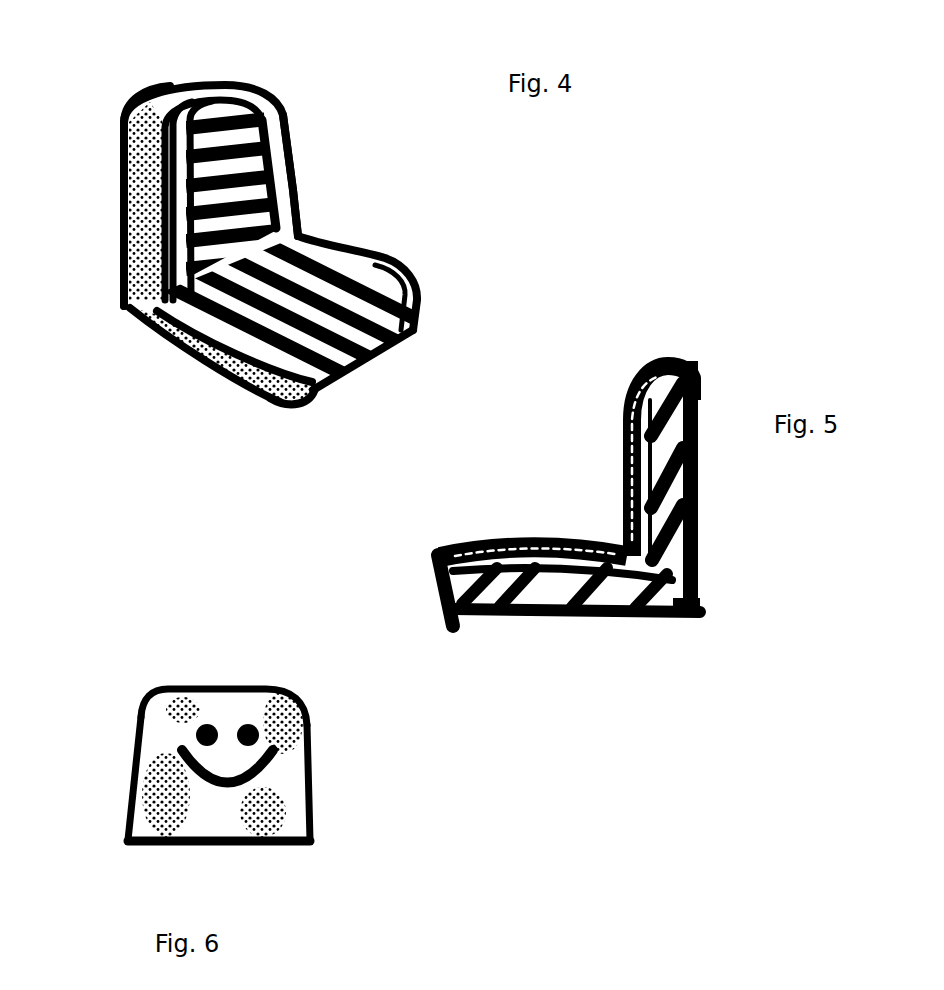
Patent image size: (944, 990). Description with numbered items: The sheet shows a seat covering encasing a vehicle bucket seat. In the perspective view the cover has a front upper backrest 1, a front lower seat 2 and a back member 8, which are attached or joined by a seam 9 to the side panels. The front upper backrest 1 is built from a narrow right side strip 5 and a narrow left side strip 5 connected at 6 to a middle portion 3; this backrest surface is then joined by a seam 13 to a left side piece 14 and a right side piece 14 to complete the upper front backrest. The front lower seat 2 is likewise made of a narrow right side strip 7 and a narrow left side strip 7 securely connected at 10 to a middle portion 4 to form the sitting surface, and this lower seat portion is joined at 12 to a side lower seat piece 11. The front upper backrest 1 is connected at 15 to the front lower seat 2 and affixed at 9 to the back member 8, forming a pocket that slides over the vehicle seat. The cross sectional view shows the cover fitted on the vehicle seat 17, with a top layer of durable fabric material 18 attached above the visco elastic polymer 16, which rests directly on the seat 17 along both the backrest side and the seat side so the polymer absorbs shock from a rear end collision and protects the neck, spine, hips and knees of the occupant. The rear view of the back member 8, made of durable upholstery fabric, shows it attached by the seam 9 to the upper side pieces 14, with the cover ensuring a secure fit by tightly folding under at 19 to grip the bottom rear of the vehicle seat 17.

In FIG. 4, the front upper backrest 1 is at (337, 212).
In FIG. 4, the front lower seat 2 is at (337, 212).
In FIG. 4, the middle portion 3 is at (212, 82).
In FIG. 4, the middle portion 4 is at (356, 352).
In FIG. 4, the narrow side strip 5 is at (167, 97).
In FIG. 4, the connection 6 is at (270, 112).
In FIG. 4, the narrow side strip 7 is at (150, 322).
In FIG. 4, the back member 8 is at (125, 105).
In FIG. 6, the back member 8 is at (223, 703).
In FIG. 4, the seam 9 is at (128, 108).
In FIG. 6, the seam 9 is at (303, 780).
In FIG. 4, the connection 10 is at (417, 315).
In FIG. 4, the side lower seat piece 11 is at (200, 358).
In FIG. 4, the joint 12 is at (263, 400).
In FIG. 4, the seam 13 is at (130, 163).
In FIG. 4, the side piece 14 is at (150, 270).
In FIG. 4, the connection 15 is at (124, 312).
In FIG. 5, the visco elastic polymer 16 is at (622, 486).
In FIG. 5, the vehicle seat 17 is at (714, 633).
In FIG. 5, the durable material layer 18 is at (668, 356).
In FIG. 6, the fold-under 19 is at (135, 756).